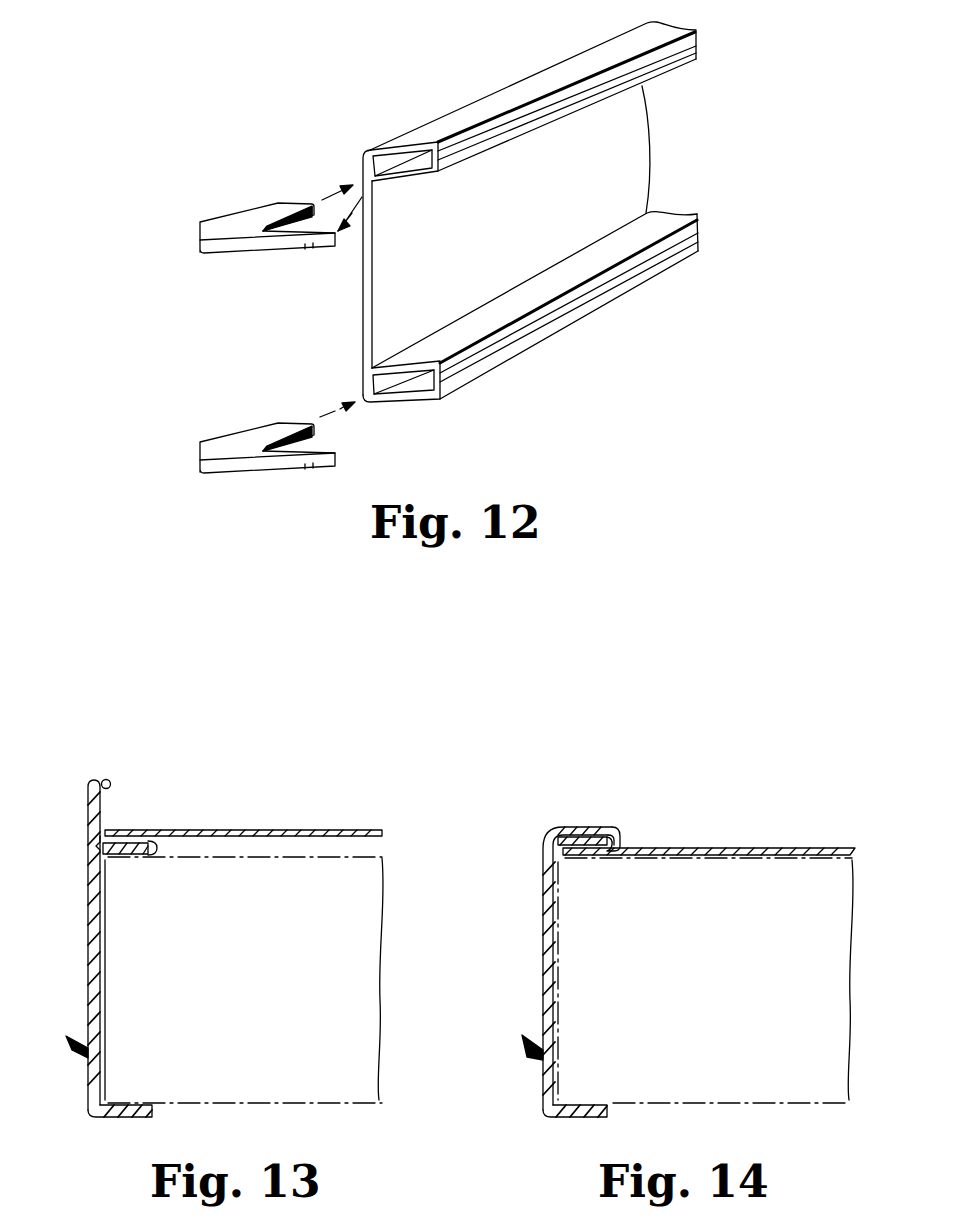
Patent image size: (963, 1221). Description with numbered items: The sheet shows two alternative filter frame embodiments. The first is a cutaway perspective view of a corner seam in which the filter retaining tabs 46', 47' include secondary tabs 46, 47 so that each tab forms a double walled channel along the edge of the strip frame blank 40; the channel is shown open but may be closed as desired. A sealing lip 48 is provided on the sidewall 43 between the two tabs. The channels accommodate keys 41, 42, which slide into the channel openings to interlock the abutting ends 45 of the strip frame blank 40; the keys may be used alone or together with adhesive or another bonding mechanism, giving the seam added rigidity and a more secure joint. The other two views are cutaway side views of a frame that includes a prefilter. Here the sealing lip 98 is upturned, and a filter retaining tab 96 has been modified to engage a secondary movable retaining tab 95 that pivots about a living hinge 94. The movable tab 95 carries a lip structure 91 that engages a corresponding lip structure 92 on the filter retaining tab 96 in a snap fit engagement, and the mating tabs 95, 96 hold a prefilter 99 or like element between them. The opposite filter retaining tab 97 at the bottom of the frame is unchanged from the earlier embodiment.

In FIG. 12, the strip frame blank 40 is at (525, 201).
In FIG. 12, the key 41 is at (277, 420).
In FIG. 12, the key 42 is at (276, 262).
In FIG. 12, the sidewall 43 is at (539, 240).
In FIG. 12, the abutting ends 45 is at (381, 140).
In FIG. 12, the secondary tab 46 is at (522, 101).
In FIG. 12, the filter retaining tab 46' is at (579, 108).
In FIG. 12, the secondary tab 47 is at (544, 289).
In FIG. 12, the filter retaining tab 47' is at (549, 272).
In FIG. 12, the sealing lip 48 is at (312, 179).
In FIG. 13, the lip structure 91 is at (136, 761).
In FIG. 14, the lip structure 91 is at (634, 811).
In FIG. 13, the lip structure 92 is at (181, 820).
In FIG. 14, the lip structure 92 is at (635, 867).
In FIG. 13, the living hinge 94 is at (71, 840).
In FIG. 13, the secondary movable retaining tab 95 is at (127, 945).
In FIG. 14, the secondary movable retaining tab 95 is at (601, 974).
In FIG. 13, the filter retaining tab 96 is at (137, 816).
In FIG. 14, the filter retaining tab 96 is at (582, 871).
In FIG. 13, the filter retaining tab 97 is at (120, 1141).
In FIG. 14, the filter retaining tab 97 is at (575, 1141).
In FIG. 13, the sealing lip 98 is at (67, 1076).
In FIG. 14, the sealing lip 98 is at (525, 1074).
In FIG. 13, the prefilter 99 is at (243, 937).
In FIG. 14, the prefilter 99 is at (706, 948).